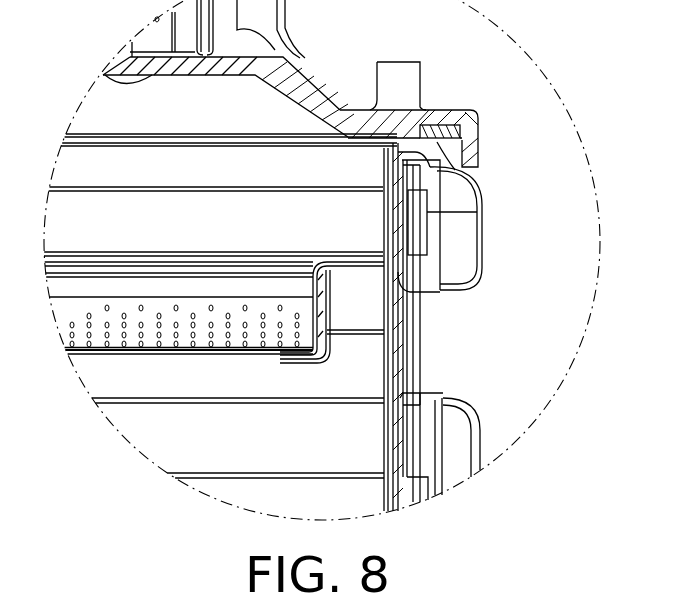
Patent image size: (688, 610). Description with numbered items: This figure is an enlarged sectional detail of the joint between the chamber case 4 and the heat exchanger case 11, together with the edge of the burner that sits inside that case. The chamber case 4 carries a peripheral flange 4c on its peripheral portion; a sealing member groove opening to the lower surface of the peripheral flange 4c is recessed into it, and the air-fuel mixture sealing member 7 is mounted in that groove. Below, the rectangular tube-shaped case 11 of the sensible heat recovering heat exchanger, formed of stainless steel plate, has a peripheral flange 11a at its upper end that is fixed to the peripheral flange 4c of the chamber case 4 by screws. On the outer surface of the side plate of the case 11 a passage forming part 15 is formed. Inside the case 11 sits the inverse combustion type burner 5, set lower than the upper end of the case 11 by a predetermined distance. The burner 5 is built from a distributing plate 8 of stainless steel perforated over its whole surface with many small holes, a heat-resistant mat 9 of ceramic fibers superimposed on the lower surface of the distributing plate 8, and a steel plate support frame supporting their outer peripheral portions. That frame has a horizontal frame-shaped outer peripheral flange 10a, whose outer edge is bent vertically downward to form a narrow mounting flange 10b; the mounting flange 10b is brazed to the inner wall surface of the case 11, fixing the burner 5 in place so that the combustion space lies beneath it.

The chamber case 4 is at (308, 72).
The peripheral flange 4c is at (437, 116).
The air-fuel mixture sealing member 7 is at (456, 131).
The peripheral flange 11a is at (437, 153).
The passage forming part 15 is at (472, 275).
The case 11 is at (400, 362).
The outer peripheral flange 10a is at (340, 260).
The mounting flange 10b is at (392, 282).
The distributing plate 8 is at (85, 349).
The heat-resistant mat 9 is at (112, 352).
The inverse combustion type burner 5 is at (145, 357).